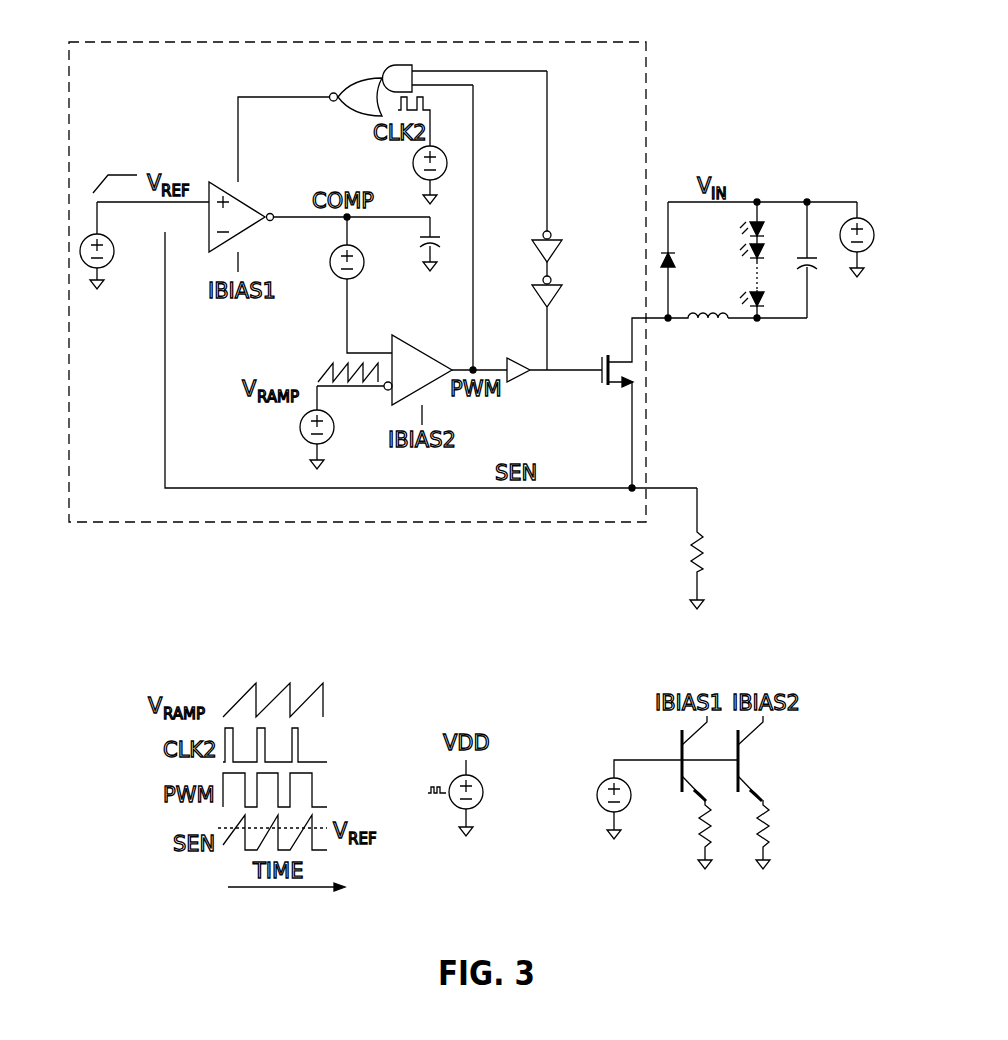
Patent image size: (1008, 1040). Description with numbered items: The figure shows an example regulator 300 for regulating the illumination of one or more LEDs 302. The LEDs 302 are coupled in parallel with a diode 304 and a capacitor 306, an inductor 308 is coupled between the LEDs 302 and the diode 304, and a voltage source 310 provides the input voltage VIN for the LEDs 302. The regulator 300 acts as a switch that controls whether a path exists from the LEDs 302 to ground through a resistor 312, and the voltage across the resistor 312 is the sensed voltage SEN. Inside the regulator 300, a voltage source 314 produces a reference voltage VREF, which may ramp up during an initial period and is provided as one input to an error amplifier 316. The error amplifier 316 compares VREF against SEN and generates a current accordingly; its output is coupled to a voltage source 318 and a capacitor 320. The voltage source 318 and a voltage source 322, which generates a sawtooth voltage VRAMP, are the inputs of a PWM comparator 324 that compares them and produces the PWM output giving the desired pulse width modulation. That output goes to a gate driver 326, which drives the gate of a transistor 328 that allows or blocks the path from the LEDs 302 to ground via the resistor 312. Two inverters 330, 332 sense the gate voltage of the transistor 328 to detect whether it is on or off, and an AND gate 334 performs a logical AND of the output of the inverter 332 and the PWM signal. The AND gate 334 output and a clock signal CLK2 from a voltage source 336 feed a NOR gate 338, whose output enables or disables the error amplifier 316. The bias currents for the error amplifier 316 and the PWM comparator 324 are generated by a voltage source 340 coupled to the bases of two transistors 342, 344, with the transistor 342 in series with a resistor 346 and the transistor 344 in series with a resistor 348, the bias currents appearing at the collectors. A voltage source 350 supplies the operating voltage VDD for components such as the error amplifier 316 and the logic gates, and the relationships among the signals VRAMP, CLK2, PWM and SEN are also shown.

The regulator 300 is at (636, 70).
The LEDs 302 is at (760, 322).
The diode 304 is at (677, 262).
The capacitor 306 is at (820, 262).
The inductor 308 is at (702, 312).
The voltage source 310 is at (866, 221).
The resistor 312 is at (703, 542).
The voltage source 314 is at (106, 270).
The error amplifier 316 is at (240, 204).
The voltage source 318 is at (330, 258).
The capacitor 320 is at (443, 247).
The voltage source 322 is at (328, 442).
The PWM comparator 324 is at (419, 345).
The gate driver 326 is at (526, 378).
The transistor 328 is at (601, 363).
The inverter 330 is at (558, 295).
The inverter 332 is at (556, 250).
The AND gate 334 is at (385, 66).
The voltage source 336 is at (413, 163).
The NOR gate 338 is at (337, 108).
The voltage source 340 is at (601, 809).
The transistor 342 is at (680, 752).
The transistor 344 is at (742, 772).
The resistor 346 is at (700, 832).
The resistor 348 is at (768, 835).
The voltage source 350 is at (481, 801).